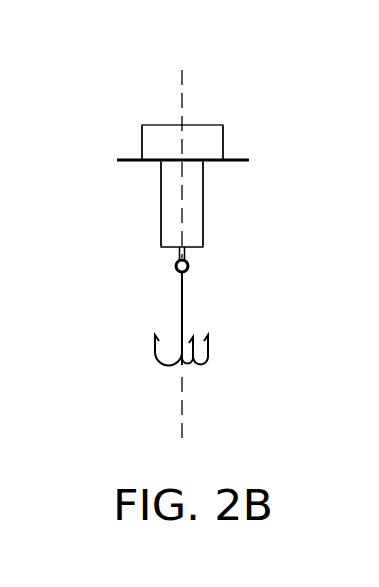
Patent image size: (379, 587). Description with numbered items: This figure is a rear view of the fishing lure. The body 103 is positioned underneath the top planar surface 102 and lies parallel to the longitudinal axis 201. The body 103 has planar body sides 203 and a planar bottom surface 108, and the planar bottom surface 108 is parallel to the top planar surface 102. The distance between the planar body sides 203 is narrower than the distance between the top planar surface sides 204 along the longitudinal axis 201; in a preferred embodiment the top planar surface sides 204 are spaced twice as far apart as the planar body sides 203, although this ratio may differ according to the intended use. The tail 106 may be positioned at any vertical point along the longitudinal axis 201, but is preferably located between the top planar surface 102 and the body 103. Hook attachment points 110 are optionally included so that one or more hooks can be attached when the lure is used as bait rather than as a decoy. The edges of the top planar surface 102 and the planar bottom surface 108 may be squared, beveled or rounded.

The longitudinal axis 201 is at (182, 70).
The top planar surface 102 is at (163, 125).
The top planar surface sides 204 is at (142, 138).
The tail 106 is at (248, 160).
The body 103 is at (192, 215).
The planar body sides 203 is at (161, 179).
The planar bottom surface 108 is at (172, 248).
The hook attachment points 110 is at (187, 250).